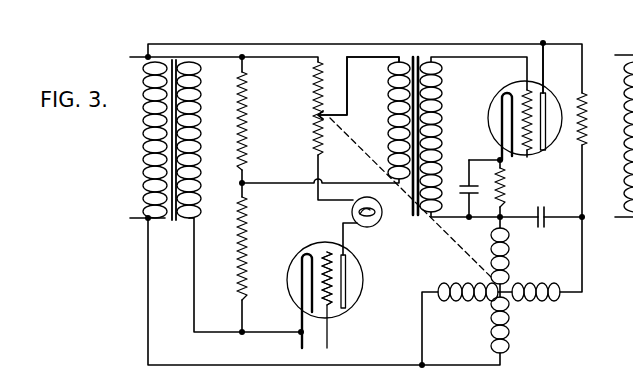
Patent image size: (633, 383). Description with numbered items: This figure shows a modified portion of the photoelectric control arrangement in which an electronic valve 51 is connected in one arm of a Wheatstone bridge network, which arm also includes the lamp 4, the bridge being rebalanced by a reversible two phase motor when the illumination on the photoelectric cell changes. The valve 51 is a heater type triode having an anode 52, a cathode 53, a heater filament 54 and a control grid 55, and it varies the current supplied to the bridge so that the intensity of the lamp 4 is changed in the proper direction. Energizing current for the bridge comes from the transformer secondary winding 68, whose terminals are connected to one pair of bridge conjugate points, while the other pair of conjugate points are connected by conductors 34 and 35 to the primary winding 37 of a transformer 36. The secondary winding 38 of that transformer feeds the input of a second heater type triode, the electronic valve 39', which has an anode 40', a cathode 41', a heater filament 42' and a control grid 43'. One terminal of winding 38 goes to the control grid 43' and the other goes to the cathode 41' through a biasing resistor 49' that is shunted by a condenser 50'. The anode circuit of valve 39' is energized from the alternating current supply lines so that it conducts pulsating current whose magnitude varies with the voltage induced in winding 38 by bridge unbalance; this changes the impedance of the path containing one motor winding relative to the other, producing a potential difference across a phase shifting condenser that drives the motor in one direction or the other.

The transformer secondary winding 68 is at (201, 152).
The conductor 34 is at (292, 184).
The conductor 35 is at (384, 62).
The primary winding 37 is at (388, 112).
The transformer 36 is at (416, 218).
The transformer secondary winding 38 is at (444, 98).
The electronic valve 39' is at (507, 118).
The cathode 41' is at (482, 126).
The heater filament 42' is at (510, 108).
The control grid 43' is at (549, 163).
The anode 40' is at (559, 96).
The condenser 50' is at (463, 181).
The biasing resistor 49' is at (515, 188).
The lamp 4 is at (378, 223).
The electronic valve 51 is at (362, 291).
The anode 52 is at (346, 266).
The cathode 53 is at (300, 275).
The heater filament 54 is at (323, 258).
The control grid 55 is at (329, 251).